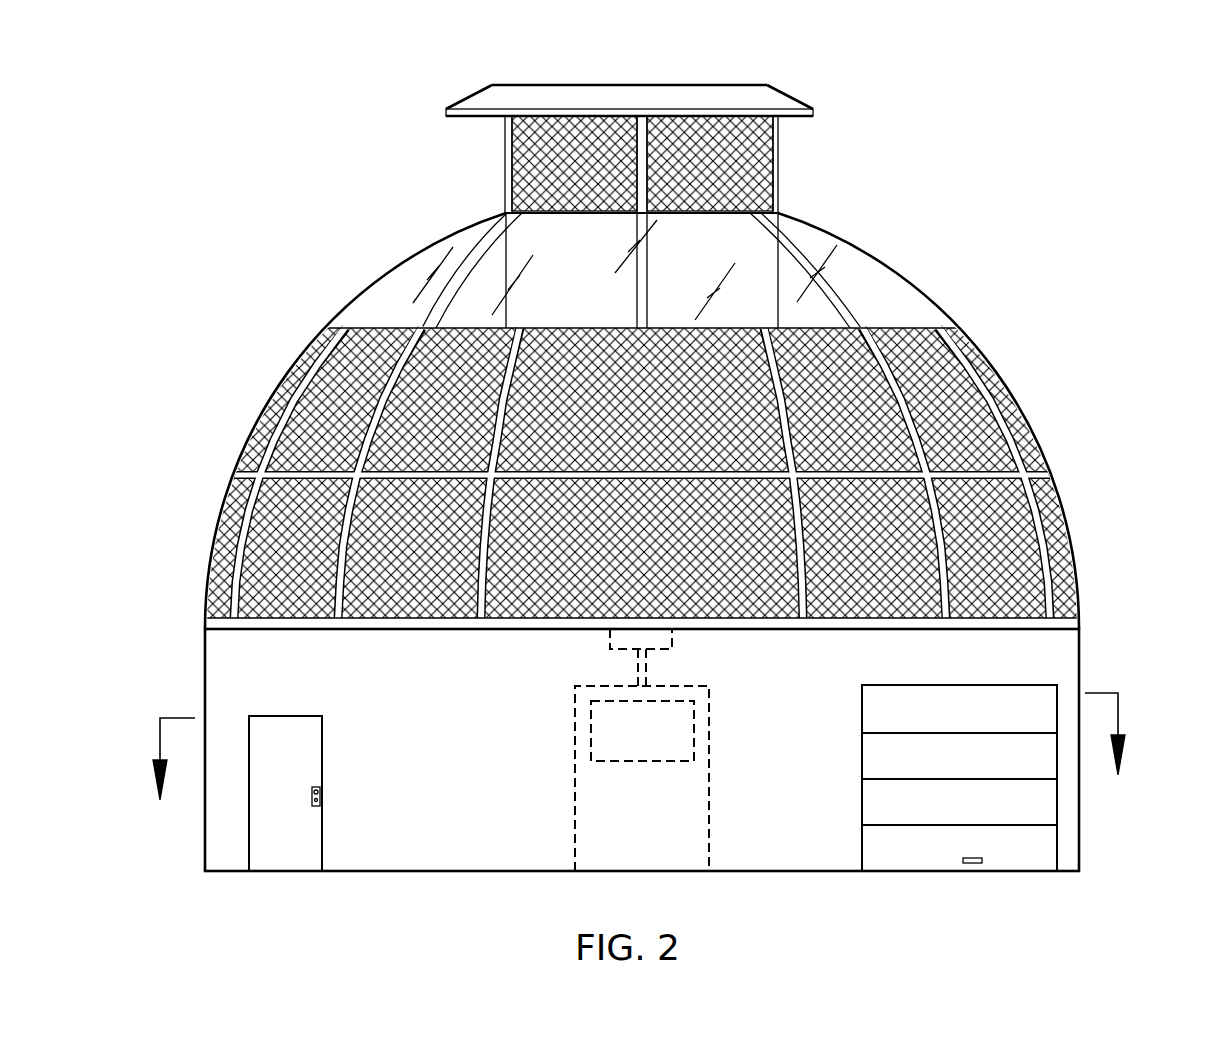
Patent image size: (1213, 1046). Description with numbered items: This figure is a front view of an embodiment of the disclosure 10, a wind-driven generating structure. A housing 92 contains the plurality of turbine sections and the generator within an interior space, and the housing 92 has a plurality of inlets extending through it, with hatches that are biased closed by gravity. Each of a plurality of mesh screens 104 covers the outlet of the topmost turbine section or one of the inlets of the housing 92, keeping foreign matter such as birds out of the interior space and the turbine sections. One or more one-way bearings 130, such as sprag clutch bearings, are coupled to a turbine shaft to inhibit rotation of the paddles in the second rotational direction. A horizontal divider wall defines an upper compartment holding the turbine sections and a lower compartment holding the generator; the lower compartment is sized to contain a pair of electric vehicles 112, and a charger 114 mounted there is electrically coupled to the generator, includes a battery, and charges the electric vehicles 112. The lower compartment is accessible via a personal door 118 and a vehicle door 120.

The greenhouse structure 10 is at (975, 122).
The housing 92 is at (1140, 642).
The mesh screens 104 is at (756, 160).
The electric vehicles 112 is at (605, 727).
The charger 114 is at (698, 812).
The personal door 118 is at (276, 855).
The vehicle door 120 is at (1010, 852).
The one-way bearings 130 is at (622, 637).